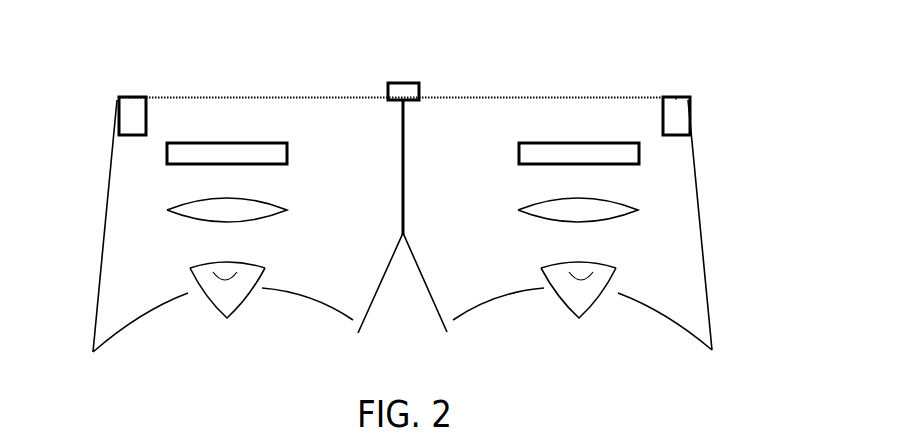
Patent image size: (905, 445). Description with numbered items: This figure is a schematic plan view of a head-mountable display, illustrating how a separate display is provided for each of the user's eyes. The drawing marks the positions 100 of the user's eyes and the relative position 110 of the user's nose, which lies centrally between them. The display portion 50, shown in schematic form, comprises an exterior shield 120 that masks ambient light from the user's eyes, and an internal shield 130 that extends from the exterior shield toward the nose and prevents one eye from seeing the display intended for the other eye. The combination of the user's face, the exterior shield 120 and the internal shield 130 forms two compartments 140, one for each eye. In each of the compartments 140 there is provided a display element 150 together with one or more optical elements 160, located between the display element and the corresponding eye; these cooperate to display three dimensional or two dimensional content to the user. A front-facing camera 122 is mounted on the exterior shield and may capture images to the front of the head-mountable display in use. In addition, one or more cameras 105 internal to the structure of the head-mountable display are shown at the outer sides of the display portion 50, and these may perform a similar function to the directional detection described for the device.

The display portion 50 is at (678, 97).
The positions of the user's eyes 100 is at (237, 315).
The cameras internal to the structure of the HMD 105 is at (127, 121).
The relative position of the user's nose 110 is at (428, 280).
The exterior shield 120 is at (479, 97).
The front-facing camera 122 is at (401, 82).
The internal shield 130 is at (406, 165).
The compartments 140 is at (273, 120).
The display element 150 is at (185, 140).
The optical elements 160 is at (170, 212).